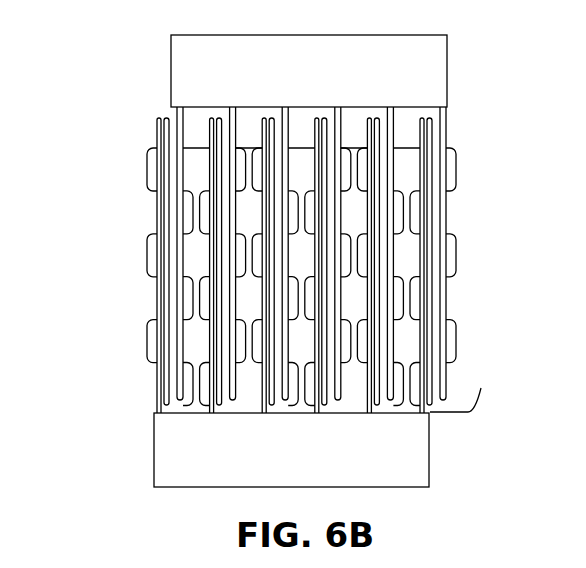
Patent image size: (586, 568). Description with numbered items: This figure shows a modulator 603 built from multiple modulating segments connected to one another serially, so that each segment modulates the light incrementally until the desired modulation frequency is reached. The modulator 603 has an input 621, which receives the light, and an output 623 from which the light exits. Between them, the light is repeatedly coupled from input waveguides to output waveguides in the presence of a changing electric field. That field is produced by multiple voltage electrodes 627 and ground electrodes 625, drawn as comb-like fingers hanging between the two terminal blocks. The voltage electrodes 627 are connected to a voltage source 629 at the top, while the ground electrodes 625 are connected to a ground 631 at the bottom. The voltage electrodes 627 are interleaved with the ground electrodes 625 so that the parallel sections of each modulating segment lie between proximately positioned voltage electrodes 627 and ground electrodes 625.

The modulator 603 is at (324, 261).
The input 621 is at (157, 411).
The output 623 is at (470, 395).
The ground electrodes 625 is at (152, 220).
The voltage electrodes 627 is at (447, 128).
The voltage source 629 is at (170, 91).
The ground 631 is at (154, 463).